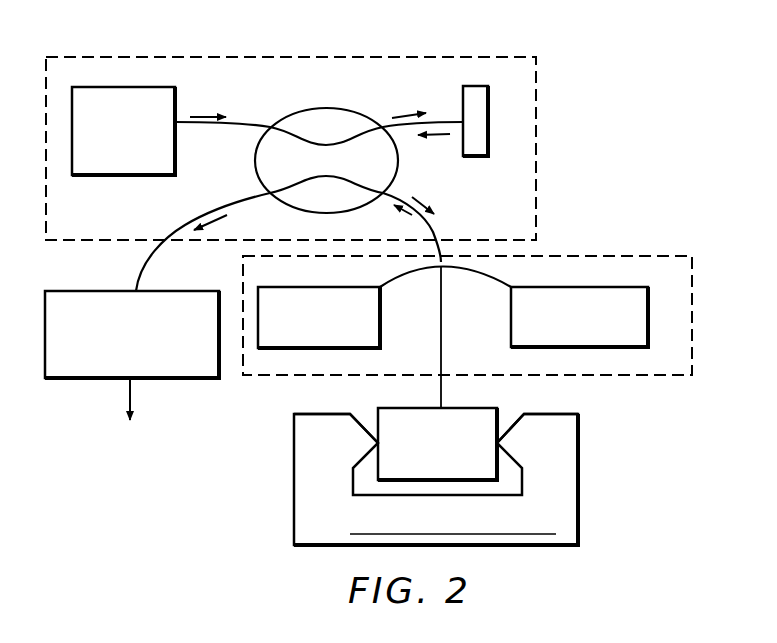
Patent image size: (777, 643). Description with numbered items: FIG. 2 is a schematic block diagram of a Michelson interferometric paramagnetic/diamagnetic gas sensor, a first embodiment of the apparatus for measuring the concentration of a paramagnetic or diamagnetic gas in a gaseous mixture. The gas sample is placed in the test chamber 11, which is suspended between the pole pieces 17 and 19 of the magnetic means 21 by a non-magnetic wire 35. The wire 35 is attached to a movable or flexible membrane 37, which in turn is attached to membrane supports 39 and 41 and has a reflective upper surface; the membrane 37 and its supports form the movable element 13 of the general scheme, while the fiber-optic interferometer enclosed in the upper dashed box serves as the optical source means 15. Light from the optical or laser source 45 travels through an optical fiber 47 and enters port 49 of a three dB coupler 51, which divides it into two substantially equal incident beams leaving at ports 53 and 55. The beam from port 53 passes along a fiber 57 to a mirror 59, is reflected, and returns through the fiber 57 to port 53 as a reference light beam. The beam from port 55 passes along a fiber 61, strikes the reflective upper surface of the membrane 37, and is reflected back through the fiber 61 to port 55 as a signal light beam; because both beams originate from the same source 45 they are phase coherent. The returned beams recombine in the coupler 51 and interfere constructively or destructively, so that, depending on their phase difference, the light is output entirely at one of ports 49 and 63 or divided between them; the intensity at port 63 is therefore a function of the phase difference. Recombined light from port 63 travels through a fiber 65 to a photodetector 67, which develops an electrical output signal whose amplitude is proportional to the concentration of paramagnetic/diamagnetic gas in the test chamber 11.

The test chamber 11 is at (499, 416).
The movable element 13 is at (693, 298).
The optical source means 15 is at (536, 103).
The pole piece 17 is at (346, 414).
The pole piece 19 is at (565, 420).
The magnetic means 21 is at (436, 479).
The non-magnetic wire 35 is at (441, 392).
The flexible membrane 37 is at (493, 296).
The membrane support 39 is at (297, 287).
The membrane support 41 is at (622, 287).
The optical or laser source 45 is at (117, 177).
The optical fiber 47 is at (240, 125).
The port 49 is at (270, 127).
The 3 dB coupler 51 is at (325, 103).
The port 53 is at (390, 132).
The port 55 is at (400, 192).
The fiber 57 is at (448, 120).
The mirror 59 is at (488, 107).
The fiber 61 is at (437, 233).
The port 63 is at (270, 193).
The fiber 65 is at (172, 232).
The photodetector 67 is at (83, 291).